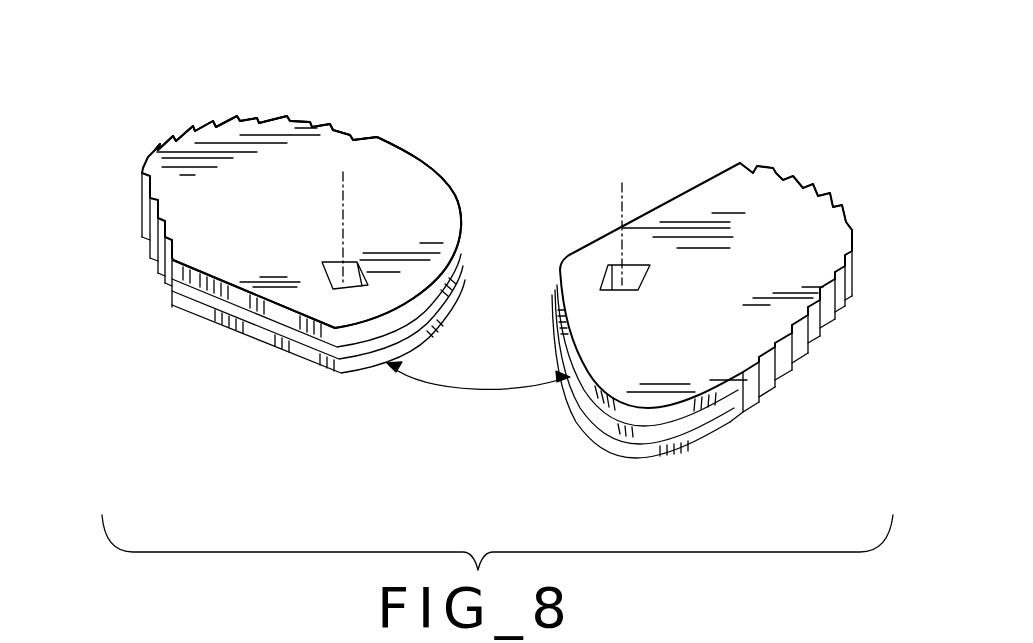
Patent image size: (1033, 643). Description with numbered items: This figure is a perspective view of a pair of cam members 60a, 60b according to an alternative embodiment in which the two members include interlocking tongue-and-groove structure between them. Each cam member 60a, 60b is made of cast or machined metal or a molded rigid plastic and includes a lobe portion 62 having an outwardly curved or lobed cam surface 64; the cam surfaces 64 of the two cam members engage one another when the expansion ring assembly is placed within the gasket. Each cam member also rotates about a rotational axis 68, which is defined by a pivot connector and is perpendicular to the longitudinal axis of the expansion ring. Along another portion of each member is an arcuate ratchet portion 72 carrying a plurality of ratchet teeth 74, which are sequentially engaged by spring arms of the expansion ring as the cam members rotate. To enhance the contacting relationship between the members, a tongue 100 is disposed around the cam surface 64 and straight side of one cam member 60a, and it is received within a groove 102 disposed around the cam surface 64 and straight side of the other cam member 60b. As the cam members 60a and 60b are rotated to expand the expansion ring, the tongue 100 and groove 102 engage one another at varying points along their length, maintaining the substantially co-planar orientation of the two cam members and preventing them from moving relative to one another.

The cam member 60a is at (750, 99).
The cam member 60b is at (218, 108).
The lobe portion 62 is at (436, 173).
The cam surface 64 is at (345, 367).
The rotational axis 68 is at (343, 203).
The arcuate ratchet portion 72 is at (150, 148).
The ratchet teeth 74 is at (142, 193).
The tongue 100 is at (566, 353).
The groove 102 is at (455, 262).